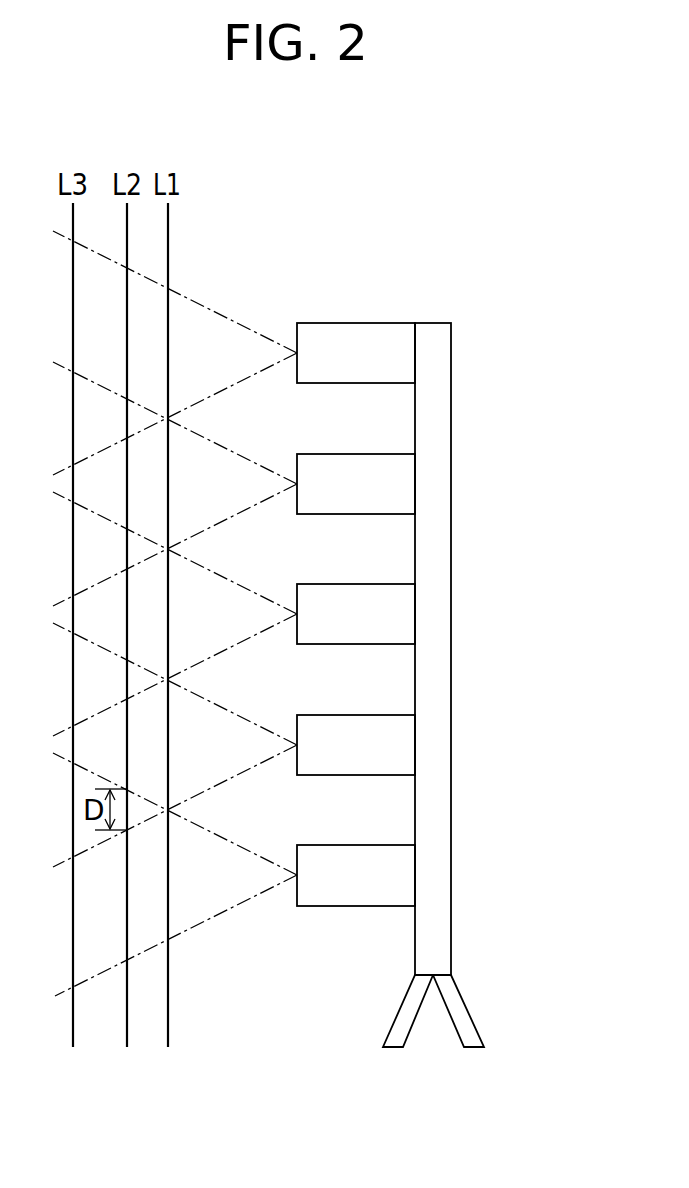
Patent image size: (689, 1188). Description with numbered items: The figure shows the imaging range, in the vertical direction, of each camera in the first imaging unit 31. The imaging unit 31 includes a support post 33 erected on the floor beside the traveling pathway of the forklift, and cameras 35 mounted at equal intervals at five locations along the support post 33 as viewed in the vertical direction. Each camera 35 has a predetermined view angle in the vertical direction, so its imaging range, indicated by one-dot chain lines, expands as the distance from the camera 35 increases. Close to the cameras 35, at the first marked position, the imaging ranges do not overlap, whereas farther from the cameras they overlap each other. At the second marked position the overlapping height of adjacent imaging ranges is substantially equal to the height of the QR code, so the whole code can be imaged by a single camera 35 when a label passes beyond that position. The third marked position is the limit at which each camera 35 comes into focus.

The first imaging unit 31 is at (430, 675).
The support post 33 is at (432, 547).
The camera 35 is at (380, 356).